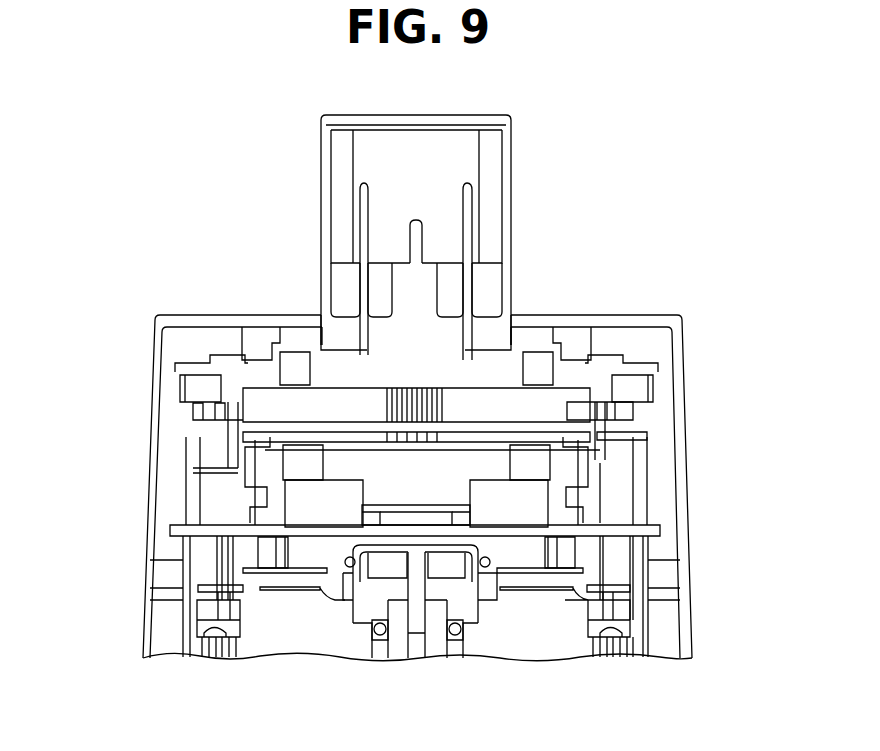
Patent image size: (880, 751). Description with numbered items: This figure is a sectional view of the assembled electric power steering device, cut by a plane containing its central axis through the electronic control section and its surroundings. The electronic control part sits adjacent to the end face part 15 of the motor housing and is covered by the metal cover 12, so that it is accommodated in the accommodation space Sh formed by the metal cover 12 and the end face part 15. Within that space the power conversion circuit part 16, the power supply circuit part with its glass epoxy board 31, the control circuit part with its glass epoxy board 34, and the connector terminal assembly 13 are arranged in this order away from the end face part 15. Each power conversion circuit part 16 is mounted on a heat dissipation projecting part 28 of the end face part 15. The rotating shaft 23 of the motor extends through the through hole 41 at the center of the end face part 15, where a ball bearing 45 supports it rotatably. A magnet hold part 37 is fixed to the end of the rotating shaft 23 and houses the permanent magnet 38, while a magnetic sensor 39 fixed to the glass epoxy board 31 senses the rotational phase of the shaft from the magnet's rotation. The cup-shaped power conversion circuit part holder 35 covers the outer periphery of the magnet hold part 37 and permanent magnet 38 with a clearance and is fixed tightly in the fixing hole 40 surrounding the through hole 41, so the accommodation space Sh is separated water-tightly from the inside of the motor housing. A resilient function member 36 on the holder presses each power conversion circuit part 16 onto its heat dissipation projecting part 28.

The metal cover 12 is at (148, 368).
The connector terminal assembly 13 is at (511, 192).
The end face part 15 is at (640, 618).
The power conversion circuit part 16 is at (218, 592).
The rotating shaft 23 is at (403, 635).
The heat dissipation projecting part 28 is at (270, 593).
The glass epoxy board 31 is at (660, 530).
The glass epoxy board 34 is at (640, 422).
The power conversion circuit part holder 35 is at (187, 558).
The resilient function member 36 is at (320, 570).
The magnet hold part 37 is at (450, 583).
The permanent magnet 38 is at (383, 525).
The magnetic sensor 39 is at (426, 540).
The fixing hole 40 is at (353, 620).
The through hole 41 is at (450, 650).
The ball bearing 45 is at (375, 637).
The accommodation space Sh is at (162, 494).